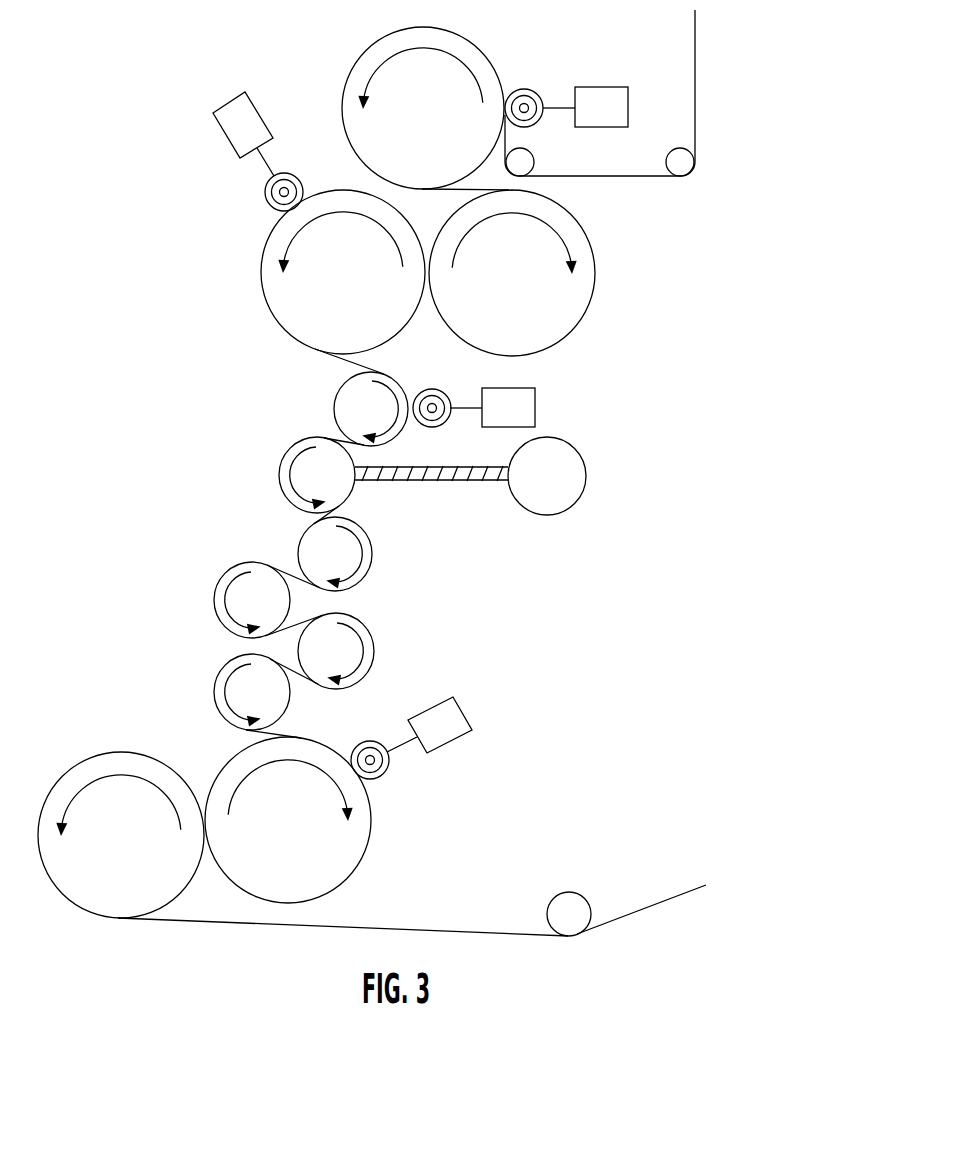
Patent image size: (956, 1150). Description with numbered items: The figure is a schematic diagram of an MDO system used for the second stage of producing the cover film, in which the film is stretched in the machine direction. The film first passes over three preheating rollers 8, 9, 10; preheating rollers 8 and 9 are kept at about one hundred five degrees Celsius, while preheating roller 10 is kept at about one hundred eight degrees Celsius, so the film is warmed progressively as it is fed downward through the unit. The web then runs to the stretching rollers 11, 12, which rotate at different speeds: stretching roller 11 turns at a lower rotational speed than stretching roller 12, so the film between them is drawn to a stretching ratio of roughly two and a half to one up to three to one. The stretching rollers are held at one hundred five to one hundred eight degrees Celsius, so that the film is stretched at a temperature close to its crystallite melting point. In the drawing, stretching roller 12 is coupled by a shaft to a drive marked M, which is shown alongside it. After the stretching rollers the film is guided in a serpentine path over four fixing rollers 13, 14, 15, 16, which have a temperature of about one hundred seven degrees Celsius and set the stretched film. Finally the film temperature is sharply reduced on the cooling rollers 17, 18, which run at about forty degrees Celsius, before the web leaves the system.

The preheating roller 8 is at (416, 119).
The preheating roller 9 is at (511, 290).
The preheating roller 10 is at (330, 288).
The stretching roller 11 is at (360, 421).
The stretching roller 12 is at (307, 485).
The motor M is at (539, 485).
The fixing roller 13 is at (322, 566).
The fixing roller 14 is at (242, 610).
The fixing roller 15 is at (321, 660).
The fixing roller 16 is at (242, 703).
The cooling roller 17 is at (279, 836).
The cooling roller 18 is at (109, 855).